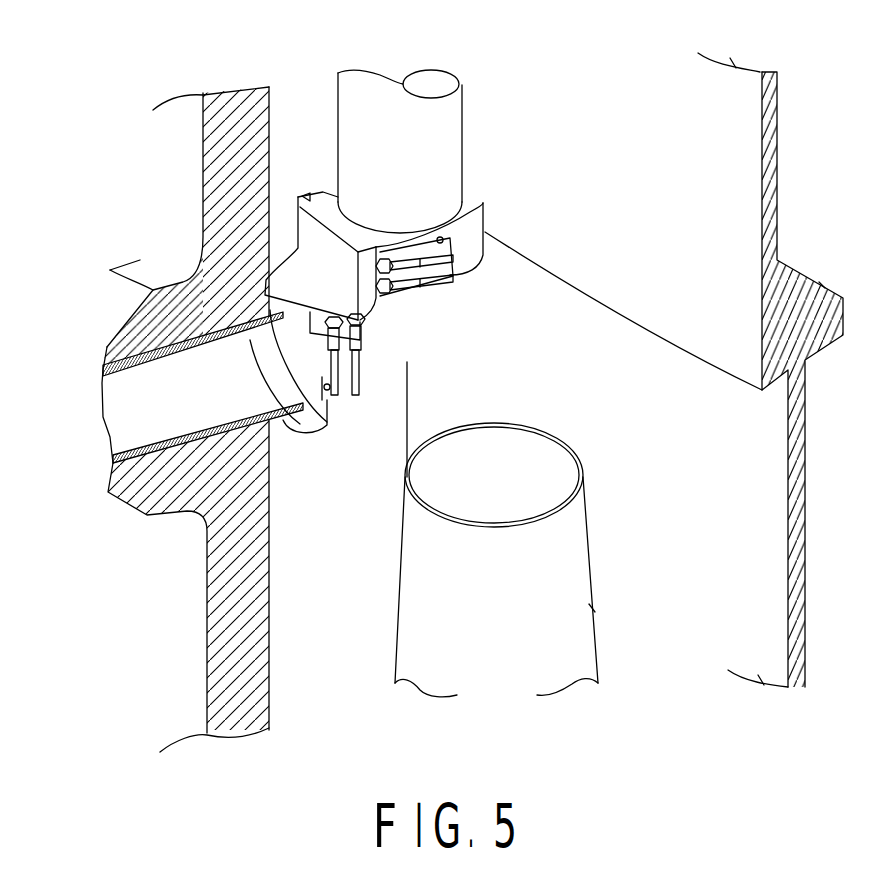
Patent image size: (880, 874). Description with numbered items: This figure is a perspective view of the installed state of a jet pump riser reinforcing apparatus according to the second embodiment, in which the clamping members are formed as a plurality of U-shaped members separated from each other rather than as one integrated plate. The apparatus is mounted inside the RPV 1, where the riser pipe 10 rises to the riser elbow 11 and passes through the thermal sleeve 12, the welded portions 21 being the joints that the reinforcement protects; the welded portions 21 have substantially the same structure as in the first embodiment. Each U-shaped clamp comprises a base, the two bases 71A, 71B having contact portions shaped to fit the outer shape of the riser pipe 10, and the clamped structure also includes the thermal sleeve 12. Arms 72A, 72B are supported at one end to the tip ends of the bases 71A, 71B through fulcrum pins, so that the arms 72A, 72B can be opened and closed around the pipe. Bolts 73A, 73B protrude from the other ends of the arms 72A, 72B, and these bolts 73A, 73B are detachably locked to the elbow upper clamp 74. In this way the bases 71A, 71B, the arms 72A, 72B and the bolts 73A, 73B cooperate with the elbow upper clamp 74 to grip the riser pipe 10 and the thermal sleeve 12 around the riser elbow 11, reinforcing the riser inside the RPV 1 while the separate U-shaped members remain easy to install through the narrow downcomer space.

The RPV 1 is at (239, 108).
The riser pipe 10 is at (377, 82).
The riser elbow 11 is at (437, 315).
The thermal sleeve 12 is at (120, 418).
The welded portions 21 is at (213, 337).
The base 71A is at (470, 204).
The base 71B is at (294, 428).
The arm 72A is at (452, 265).
The arm 72B is at (358, 368).
The bolt 73A is at (392, 268).
The bolt 73B is at (353, 314).
The elbow upper clamp 74 is at (317, 213).